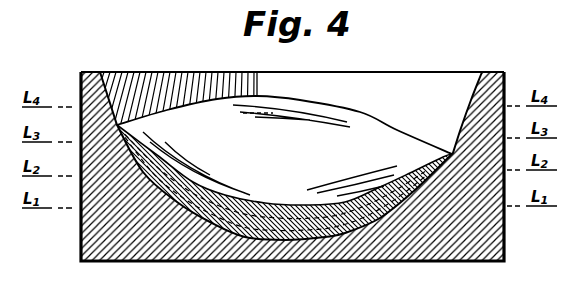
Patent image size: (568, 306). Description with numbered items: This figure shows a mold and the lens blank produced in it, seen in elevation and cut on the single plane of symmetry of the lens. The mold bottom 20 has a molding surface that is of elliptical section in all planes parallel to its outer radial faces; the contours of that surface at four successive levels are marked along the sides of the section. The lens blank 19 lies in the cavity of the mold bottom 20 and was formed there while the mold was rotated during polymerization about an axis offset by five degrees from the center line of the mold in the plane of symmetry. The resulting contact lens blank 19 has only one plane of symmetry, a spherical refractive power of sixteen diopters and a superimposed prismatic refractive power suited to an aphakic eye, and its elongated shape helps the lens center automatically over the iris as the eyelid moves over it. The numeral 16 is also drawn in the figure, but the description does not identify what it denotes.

The lens 16 is at (247, 234).
The lens blank 19 is at (305, 218).
The mold bottom 20 is at (205, 251).